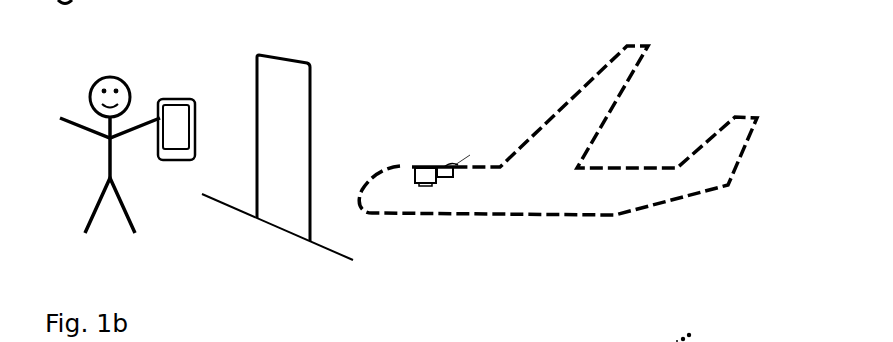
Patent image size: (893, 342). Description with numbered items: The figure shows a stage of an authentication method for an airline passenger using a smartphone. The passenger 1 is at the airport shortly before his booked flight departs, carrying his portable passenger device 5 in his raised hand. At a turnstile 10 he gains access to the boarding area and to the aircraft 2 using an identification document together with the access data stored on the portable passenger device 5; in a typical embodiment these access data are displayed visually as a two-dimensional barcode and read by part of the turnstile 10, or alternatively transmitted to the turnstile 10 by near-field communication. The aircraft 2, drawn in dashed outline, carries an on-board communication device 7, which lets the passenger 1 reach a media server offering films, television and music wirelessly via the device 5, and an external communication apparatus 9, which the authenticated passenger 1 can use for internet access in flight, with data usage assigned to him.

The passenger 1 is at (110, 162).
The aircraft 2 is at (583, 195).
The portable passenger device 5 is at (175, 98).
The on-board communication device 7 is at (425, 168).
The external communication apparatus 9 is at (450, 165).
The turnstile 10 is at (273, 227).